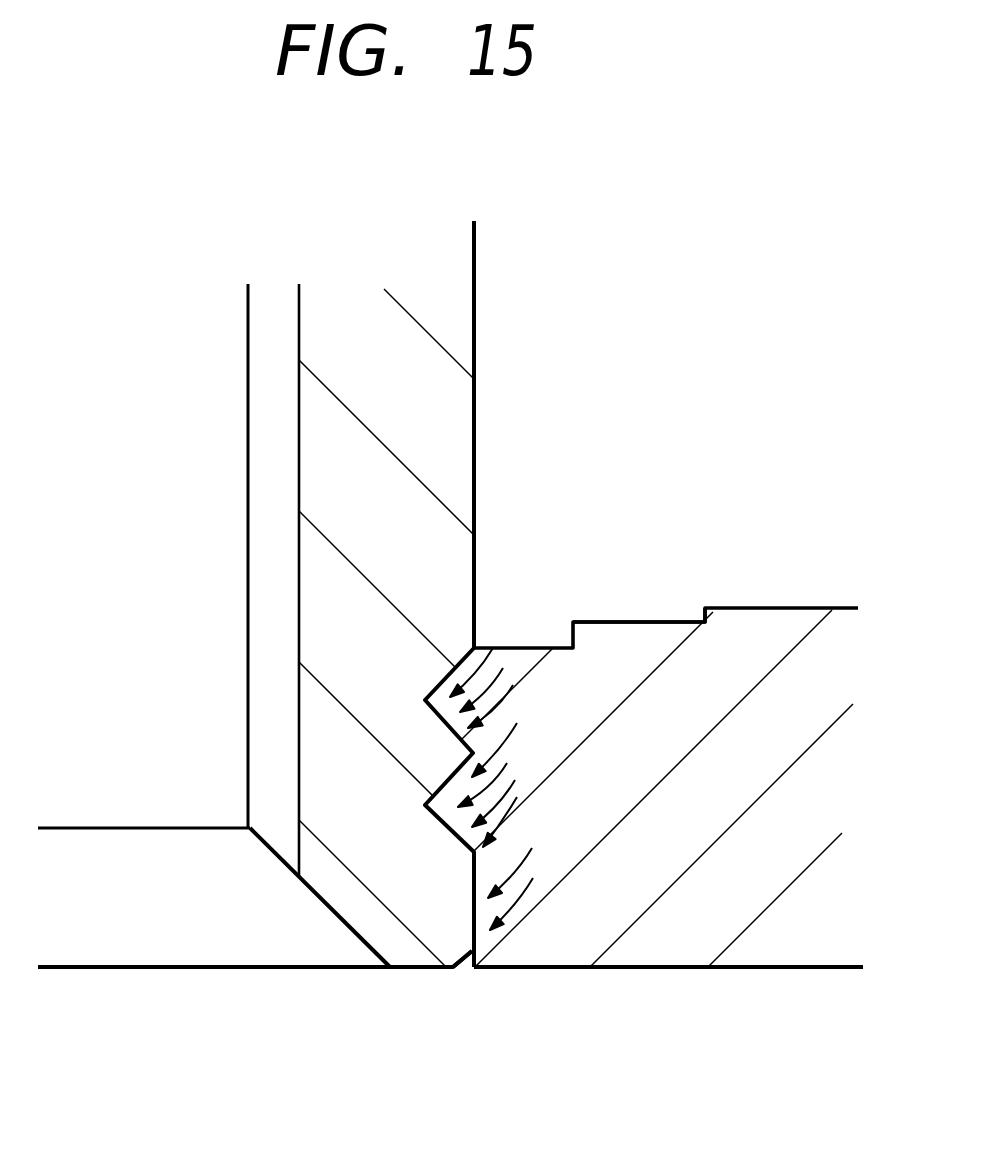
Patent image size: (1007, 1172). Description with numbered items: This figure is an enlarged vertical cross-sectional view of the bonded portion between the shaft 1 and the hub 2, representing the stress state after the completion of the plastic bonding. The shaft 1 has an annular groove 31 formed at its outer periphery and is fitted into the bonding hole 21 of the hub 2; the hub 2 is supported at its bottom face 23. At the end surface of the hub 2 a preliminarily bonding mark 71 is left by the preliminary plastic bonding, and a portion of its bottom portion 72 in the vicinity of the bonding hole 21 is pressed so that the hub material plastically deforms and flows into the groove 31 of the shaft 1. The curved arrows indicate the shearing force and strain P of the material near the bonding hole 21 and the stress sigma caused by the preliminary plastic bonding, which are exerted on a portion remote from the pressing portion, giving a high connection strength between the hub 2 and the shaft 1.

The shaft 1 is at (458, 393).
The hub 2 is at (755, 940).
The annular groove 31 is at (442, 683).
The bottom portion 72 is at (502, 648).
The preliminarily bonding mark 71 is at (635, 622).
The bonding hole 21 is at (468, 922).
The bottom face 23 is at (574, 968).